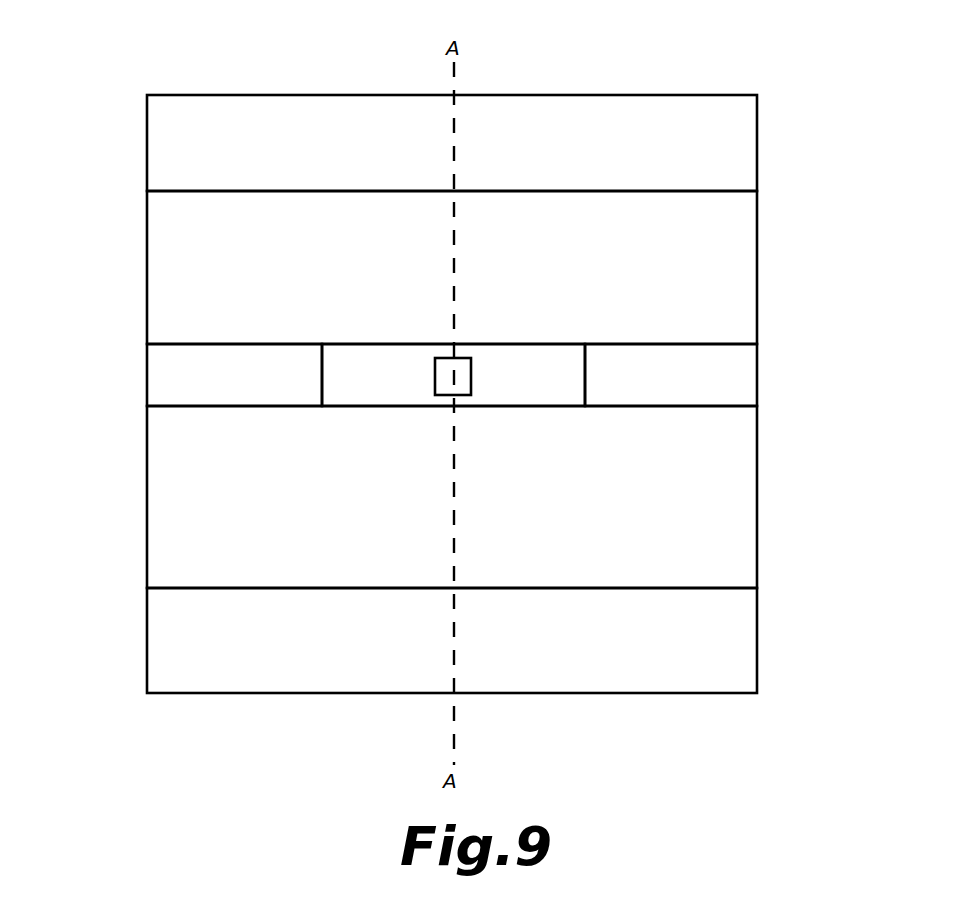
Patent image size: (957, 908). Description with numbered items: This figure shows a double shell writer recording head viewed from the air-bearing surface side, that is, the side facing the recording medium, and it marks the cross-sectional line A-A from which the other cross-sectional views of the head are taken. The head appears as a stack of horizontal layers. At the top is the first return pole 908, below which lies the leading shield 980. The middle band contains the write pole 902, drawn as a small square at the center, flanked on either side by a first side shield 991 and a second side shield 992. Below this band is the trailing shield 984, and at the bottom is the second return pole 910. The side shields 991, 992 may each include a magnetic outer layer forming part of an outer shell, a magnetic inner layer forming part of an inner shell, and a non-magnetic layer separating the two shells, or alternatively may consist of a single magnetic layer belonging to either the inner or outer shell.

The first return pole 908 is at (525, 115).
The leading shield 980 is at (742, 221).
The first side shield 991 is at (173, 370).
The second side shield 992 is at (737, 383).
The write pole 902 is at (435, 395).
The trailing shield 984 is at (732, 530).
The second return pole 910 is at (593, 667).